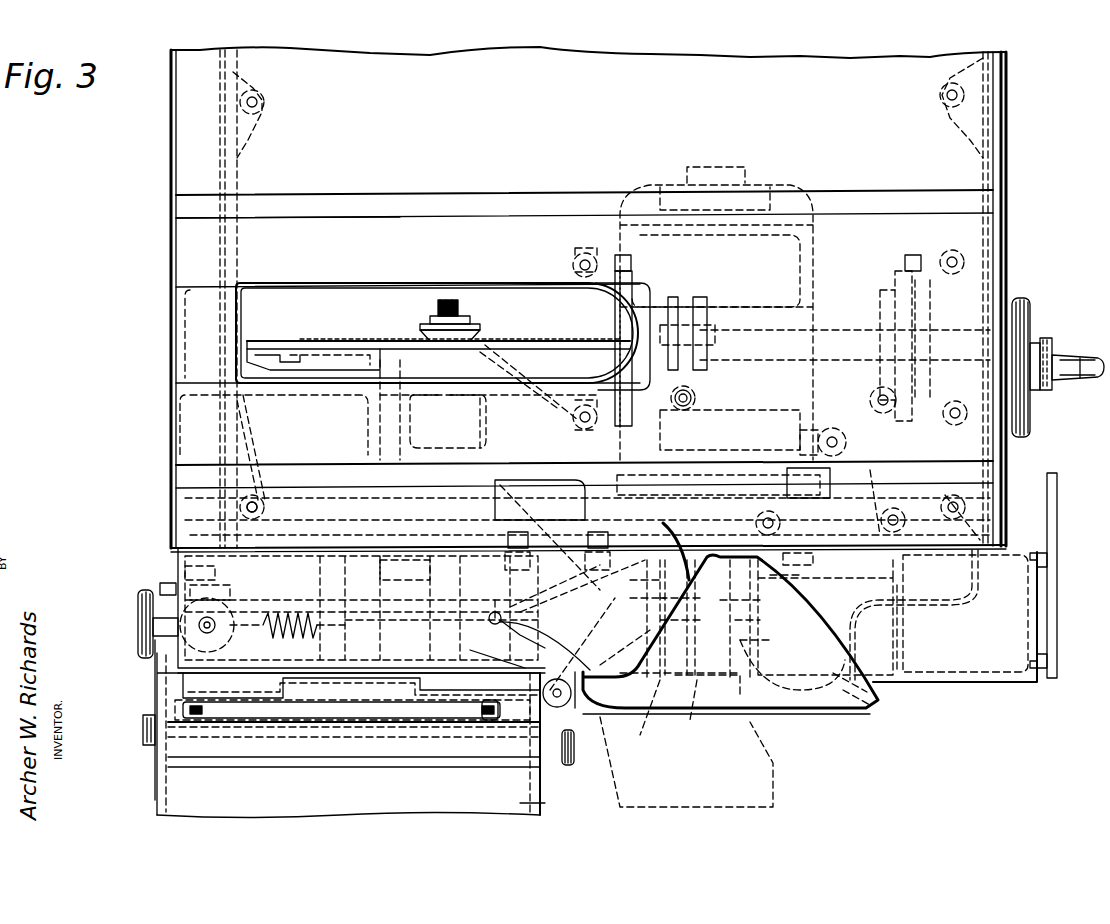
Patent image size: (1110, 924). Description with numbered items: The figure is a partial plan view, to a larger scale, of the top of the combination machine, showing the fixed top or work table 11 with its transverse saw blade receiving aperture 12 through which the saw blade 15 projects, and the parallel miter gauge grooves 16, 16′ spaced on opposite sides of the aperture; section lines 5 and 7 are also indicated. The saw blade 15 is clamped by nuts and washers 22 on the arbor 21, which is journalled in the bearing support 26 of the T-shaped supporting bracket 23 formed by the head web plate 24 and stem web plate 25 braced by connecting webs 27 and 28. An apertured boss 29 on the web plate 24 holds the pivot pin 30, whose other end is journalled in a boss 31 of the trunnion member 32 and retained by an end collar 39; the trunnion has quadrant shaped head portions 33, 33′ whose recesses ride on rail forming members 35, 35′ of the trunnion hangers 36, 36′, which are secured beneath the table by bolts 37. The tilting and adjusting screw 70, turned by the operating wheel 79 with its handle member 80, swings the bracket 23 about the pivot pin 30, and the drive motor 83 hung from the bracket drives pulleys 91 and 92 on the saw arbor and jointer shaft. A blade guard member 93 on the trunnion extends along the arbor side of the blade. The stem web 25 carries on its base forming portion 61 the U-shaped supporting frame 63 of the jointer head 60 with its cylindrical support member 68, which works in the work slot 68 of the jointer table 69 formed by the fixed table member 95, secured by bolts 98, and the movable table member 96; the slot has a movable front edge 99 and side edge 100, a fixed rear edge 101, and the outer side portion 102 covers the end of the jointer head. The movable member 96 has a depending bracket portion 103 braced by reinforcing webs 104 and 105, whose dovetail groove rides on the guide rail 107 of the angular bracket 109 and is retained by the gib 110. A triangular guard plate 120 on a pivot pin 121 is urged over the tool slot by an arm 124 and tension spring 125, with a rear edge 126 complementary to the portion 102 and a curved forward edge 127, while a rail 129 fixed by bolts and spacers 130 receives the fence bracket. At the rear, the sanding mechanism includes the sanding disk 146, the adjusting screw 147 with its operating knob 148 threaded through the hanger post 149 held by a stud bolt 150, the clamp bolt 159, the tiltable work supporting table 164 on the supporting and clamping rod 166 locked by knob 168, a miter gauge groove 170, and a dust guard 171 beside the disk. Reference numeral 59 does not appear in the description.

The section line 5 is at (930, 145).
The section line 7 is at (255, 237).
The fixed top 11 is at (950, 165).
The saw blade receiving aperture 12 is at (378, 287).
The saw blade 15 is at (385, 340).
The groove 16 is at (185, 213).
The groove 16′ is at (258, 505).
The arbor 21 is at (448, 300).
The clamping nuts and washers 22 is at (468, 326).
The supporting bracket 23 is at (530, 372).
The head forming member 24 is at (548, 525).
The stem forming member 25 is at (635, 640).
The bearing support 26 is at (430, 406).
The connecting web 27 is at (517, 433).
The connecting web 28 is at (545, 625).
The apertured boss 29 is at (712, 440).
The pivot pin 30 is at (705, 408).
The boss 31 is at (697, 400).
The trunnion member 32 is at (775, 312).
The head portion 33 is at (634, 300).
The head portion 33′ is at (893, 300).
The rail forming member 35 is at (632, 262).
The rail forming member 35′ is at (905, 262).
The trunnion hanger 36 is at (588, 300).
The trunnion hanger 36′ is at (938, 258).
The bolt 37 is at (586, 253).
The end collar 39 is at (673, 297).
The bar 59 is at (703, 300).
The jointer head 60 is at (760, 600).
The base forming portion 61 is at (632, 577).
The supporting frame 63 is at (640, 597).
The work slot 68 is at (760, 620).
The jointer table 69 is at (812, 712).
The tilting and adjusting screw 70 is at (865, 382).
The operating knob or wheel 79 is at (1025, 318).
The handle member 80 is at (1078, 358).
The drive motor 83 is at (808, 264).
The pulley 91 is at (428, 600).
The pulley 92 is at (705, 515).
The blade guard member 93 is at (312, 355).
The fixed table member 95 is at (441, 626).
The movable table member 96 is at (1010, 665).
The bolt 98 is at (594, 534).
The front edge 99 is at (765, 641).
The side edge 100 is at (697, 712).
The rear edge 101 is at (688, 600).
The outer side portion 102 is at (645, 740).
The bracket portion 103 is at (850, 575).
The reinforcing web 104 is at (900, 634).
The reinforcing web 105 is at (770, 676).
The guide rail 107 is at (880, 565).
The angular bracket 109 is at (880, 500).
The gib 110 is at (470, 650).
The guard plate 120 is at (868, 696).
The pivot pin 121 is at (530, 680).
The arm 124 is at (590, 645).
The tension spring 125 is at (500, 612).
The rear edge 126 is at (668, 530).
The forward edge 127 is at (858, 660).
The rail 129 is at (1047, 530).
The bolts and spacers 130 is at (1045, 565).
The sanding plate or disk 146 is at (492, 722).
The adjusting screw 147 is at (268, 612).
The operating knob or handle 148 is at (142, 626).
The hanger shaft or post 149 is at (160, 590).
The stud bolt 150 is at (215, 634).
The clamp bolt 159 is at (185, 582).
The work supporting table 164 is at (545, 806).
The supporting and clamping rod 166 is at (328, 735).
The knob 168 is at (574, 742).
The miter gauge receiving groove 170 is at (438, 758).
The dust guard 171 is at (262, 715).